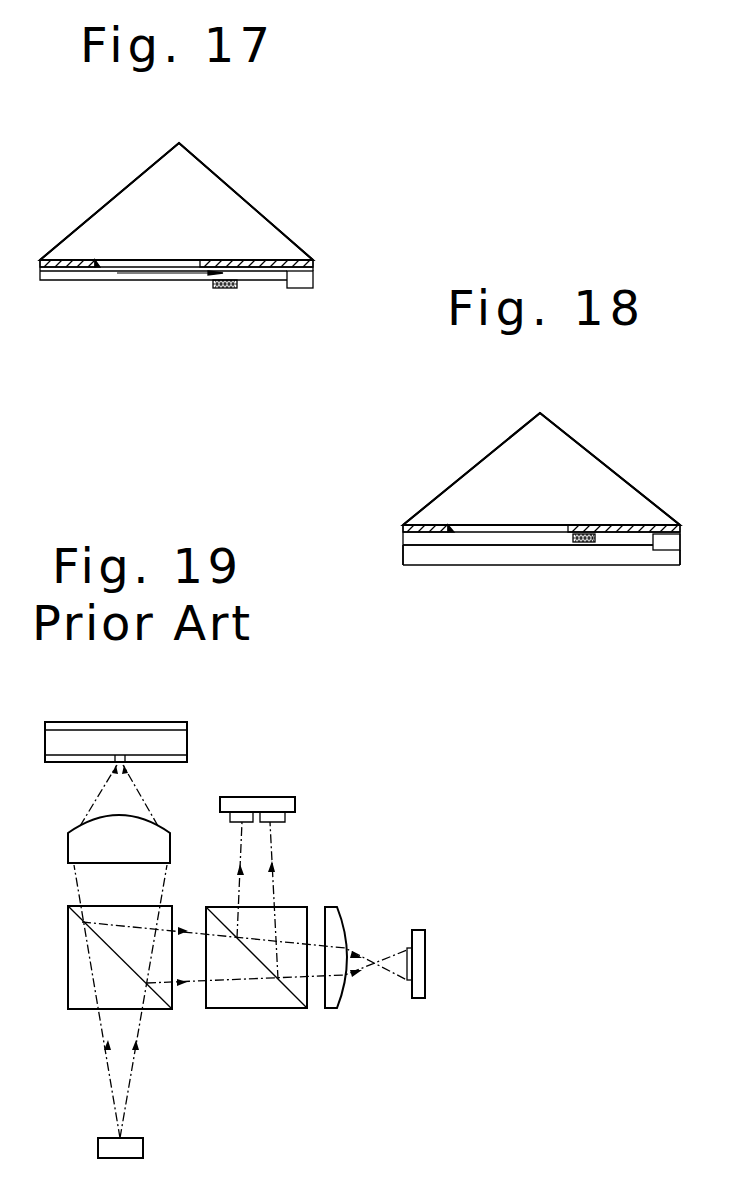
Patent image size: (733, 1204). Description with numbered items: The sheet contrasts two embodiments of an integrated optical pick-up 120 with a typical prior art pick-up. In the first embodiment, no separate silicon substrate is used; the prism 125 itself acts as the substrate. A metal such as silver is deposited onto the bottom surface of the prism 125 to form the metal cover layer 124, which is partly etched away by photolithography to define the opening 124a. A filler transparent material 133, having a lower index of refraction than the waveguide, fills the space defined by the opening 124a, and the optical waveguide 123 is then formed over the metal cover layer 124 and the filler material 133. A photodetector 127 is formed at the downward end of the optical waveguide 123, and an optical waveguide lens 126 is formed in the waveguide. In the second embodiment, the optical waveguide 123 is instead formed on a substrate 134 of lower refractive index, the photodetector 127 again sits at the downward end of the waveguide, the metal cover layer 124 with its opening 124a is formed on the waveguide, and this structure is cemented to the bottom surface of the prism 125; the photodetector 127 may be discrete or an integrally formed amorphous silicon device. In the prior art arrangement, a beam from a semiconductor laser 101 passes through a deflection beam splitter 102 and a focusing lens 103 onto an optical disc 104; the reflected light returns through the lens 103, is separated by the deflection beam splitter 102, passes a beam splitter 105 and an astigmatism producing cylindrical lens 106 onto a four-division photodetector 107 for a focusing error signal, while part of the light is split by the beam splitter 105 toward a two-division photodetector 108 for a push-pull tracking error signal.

In FIG. 17, the optical head 120 is at (252, 162).
In FIG. 18, the optical head 120 is at (608, 423).
In FIG. 17, the optical waveguide 123 is at (60, 276).
In FIG. 18, the optical waveguide 123 is at (527, 539).
In FIG. 17, the metal cover layer 124 is at (78, 270).
In FIG. 18, the metal cover layer 124 is at (422, 535).
In FIG. 17, the opening 124a is at (100, 269).
In FIG. 18, the opening 124a is at (457, 535).
In FIG. 17, the prism 125 is at (122, 203).
In FIG. 18, the prism 125 is at (483, 473).
In FIG. 17, the optical waveguide lens 126 is at (227, 289).
In FIG. 18, the optical waveguide lens 126 is at (588, 548).
In FIG. 17, the photodetector 127 is at (298, 289).
In FIG. 18, the photodetector 127 is at (665, 546).
In FIG. 17, the filler transparent material 133 is at (173, 271).
In FIG. 18, the substrate 134 is at (558, 558).
In FIG. 19, the semiconductor laser 101 is at (100, 1148).
In FIG. 19, the deflection beam splitter 102 is at (77, 942).
In FIG. 19, the focusing lens 103 is at (88, 847).
In FIG. 19, the optical disc 104 is at (163, 722).
In FIG. 19, the beam splitter 105 is at (242, 1000).
In FIG. 19, the astigmatism producing cylindrical lens 106 is at (333, 1003).
In FIG. 19, the photodetector 107 is at (418, 998).
In FIG. 19, the photodetector 108 is at (248, 797).